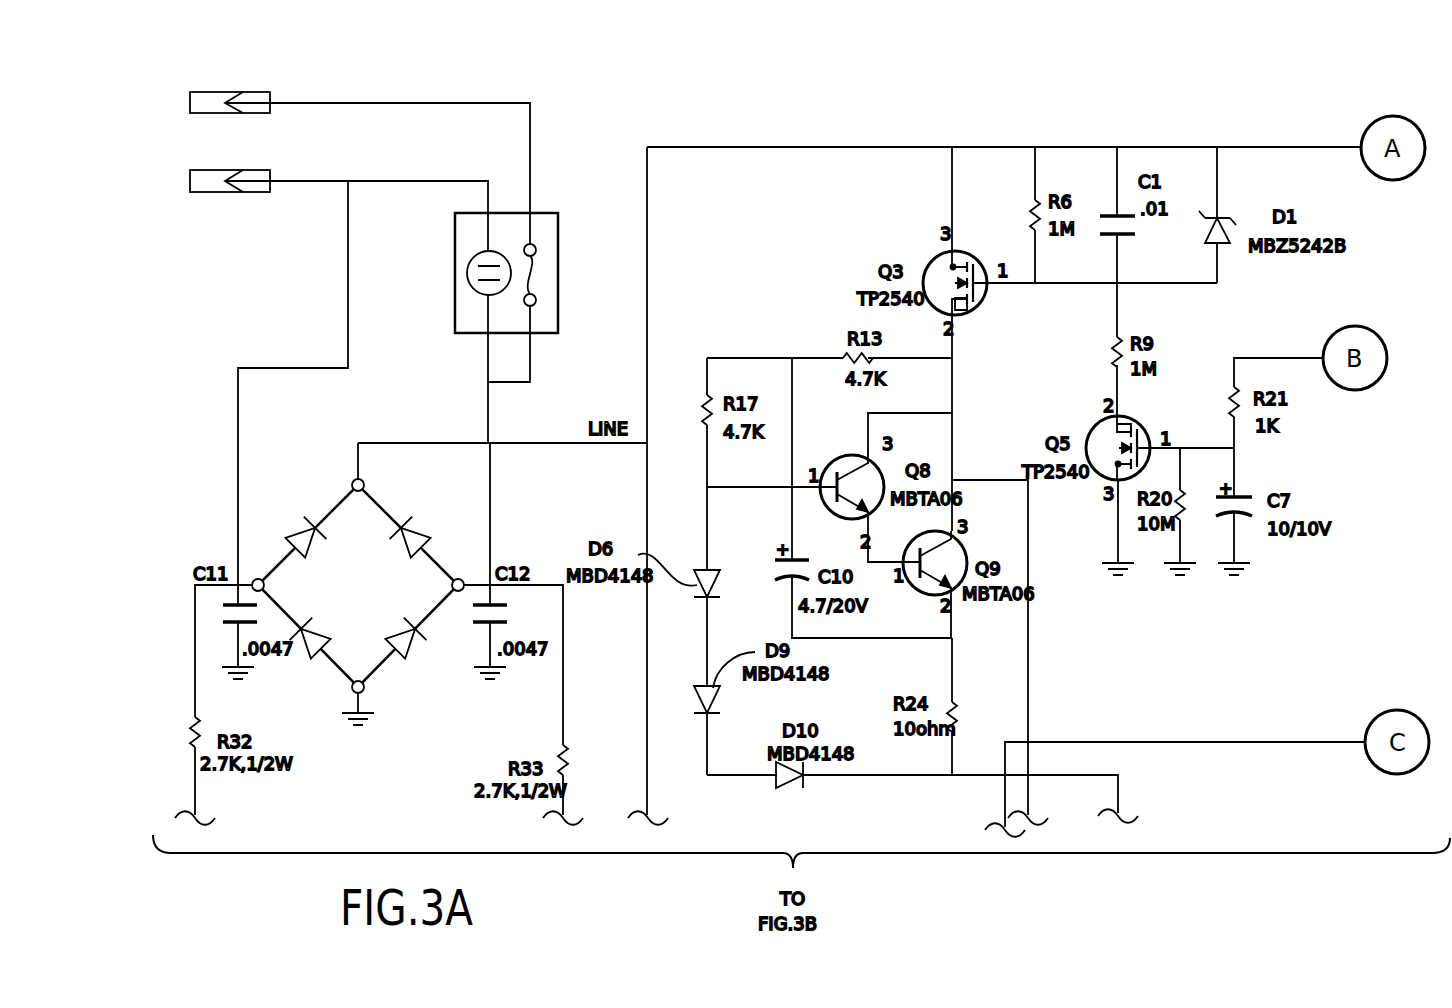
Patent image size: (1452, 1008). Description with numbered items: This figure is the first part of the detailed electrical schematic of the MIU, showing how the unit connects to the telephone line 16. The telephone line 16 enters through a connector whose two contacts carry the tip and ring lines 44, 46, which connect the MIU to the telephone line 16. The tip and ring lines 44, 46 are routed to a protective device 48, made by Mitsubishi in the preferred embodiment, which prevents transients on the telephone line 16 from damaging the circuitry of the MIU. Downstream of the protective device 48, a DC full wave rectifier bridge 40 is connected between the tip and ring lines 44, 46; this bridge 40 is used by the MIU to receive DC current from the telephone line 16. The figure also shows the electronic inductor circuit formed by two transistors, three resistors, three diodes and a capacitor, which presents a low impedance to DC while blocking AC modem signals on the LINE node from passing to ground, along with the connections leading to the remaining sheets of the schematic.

The telephone line 16 is at (182, 153).
The tip line 44 is at (349, 103).
The ring line 46 is at (344, 180).
The protective device 48 is at (548, 224).
The DC full wave rectifier bridge 40 is at (318, 490).